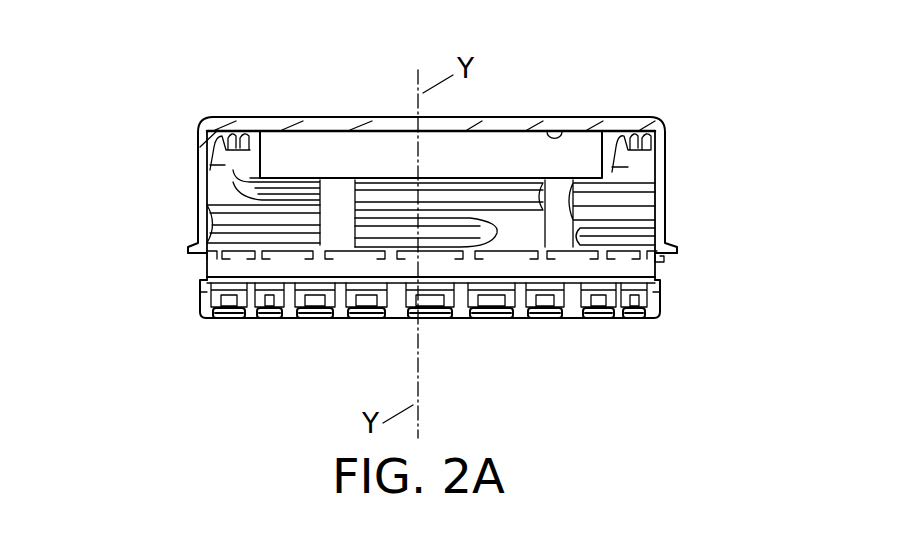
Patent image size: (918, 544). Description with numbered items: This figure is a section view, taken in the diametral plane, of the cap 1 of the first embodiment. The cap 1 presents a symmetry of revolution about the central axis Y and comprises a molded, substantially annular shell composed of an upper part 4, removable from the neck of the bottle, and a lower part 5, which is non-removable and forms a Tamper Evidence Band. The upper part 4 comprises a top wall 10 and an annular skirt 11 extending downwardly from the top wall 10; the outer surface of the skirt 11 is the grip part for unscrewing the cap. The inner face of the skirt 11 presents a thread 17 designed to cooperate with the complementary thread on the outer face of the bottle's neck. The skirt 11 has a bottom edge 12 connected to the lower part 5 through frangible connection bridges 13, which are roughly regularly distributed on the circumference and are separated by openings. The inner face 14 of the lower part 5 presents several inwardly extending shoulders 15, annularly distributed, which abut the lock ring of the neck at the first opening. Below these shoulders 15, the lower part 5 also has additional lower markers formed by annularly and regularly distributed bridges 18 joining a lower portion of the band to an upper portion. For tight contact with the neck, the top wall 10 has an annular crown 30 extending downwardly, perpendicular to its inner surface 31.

The cap 1 is at (700, 204).
The upper part 4 is at (128, 213).
The lower part 5 is at (162, 305).
The top wall 10 is at (320, 116).
The annular skirt 11 is at (205, 172).
The bottom edge 12 is at (192, 248).
The frangible connection bridges 13 is at (662, 256).
The inner face 14 is at (500, 270).
The shoulders 15 is at (348, 290).
The thread 17 is at (625, 203).
The bridges 18 is at (243, 313).
The annular crown 30 is at (610, 170).
The inner surface 31 is at (570, 126).